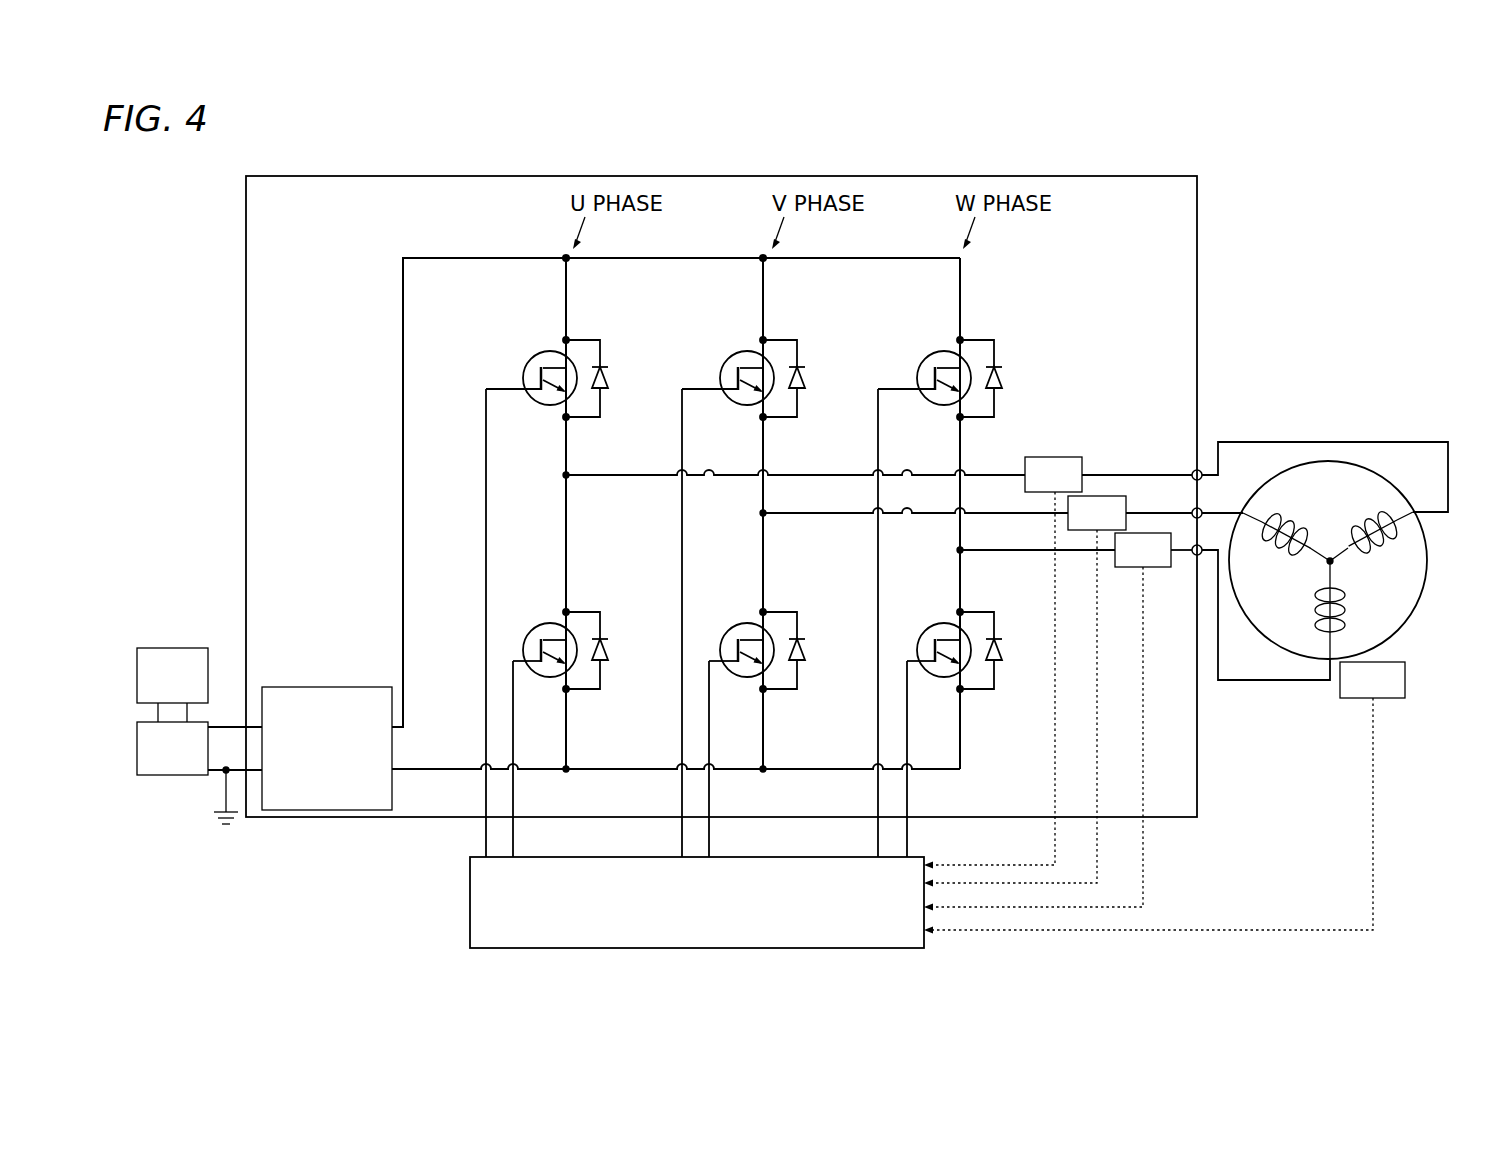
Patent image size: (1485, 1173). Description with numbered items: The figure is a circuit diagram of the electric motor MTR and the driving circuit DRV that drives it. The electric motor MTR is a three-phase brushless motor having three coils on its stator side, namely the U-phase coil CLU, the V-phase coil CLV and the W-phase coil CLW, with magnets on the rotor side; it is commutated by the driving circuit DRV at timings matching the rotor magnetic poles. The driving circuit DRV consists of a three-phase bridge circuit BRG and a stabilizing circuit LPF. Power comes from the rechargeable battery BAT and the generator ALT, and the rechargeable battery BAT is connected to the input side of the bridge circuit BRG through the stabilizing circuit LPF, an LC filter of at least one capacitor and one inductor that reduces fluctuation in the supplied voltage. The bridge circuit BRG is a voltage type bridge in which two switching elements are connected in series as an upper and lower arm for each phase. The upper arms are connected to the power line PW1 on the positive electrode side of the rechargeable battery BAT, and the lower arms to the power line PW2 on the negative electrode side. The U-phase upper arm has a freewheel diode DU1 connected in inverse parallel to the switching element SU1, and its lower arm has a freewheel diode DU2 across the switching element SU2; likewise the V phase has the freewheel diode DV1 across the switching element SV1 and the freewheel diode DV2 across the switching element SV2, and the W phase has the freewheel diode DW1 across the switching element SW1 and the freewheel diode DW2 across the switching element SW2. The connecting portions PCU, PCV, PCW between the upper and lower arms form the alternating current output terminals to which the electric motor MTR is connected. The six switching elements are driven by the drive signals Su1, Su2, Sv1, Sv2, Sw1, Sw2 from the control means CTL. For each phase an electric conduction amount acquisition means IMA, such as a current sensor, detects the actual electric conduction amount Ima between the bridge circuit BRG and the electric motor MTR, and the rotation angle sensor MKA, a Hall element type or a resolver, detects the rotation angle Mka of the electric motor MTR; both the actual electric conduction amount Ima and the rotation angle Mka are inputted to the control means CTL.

The driving circuit DRV is at (386, 171).
The power line PW1 is at (430, 255).
The power line PW2 is at (408, 767).
The three-phase bridge circuit BRG is at (480, 354).
The switching element SU1 is at (540, 350).
The freewheel diode DU1 is at (604, 361).
The switching element SV1 is at (737, 350).
The freewheel diode DV1 is at (801, 361).
The switching element SW1 is at (934, 350).
The freewheel diode DW1 is at (998, 361).
The switching element SU2 is at (540, 621).
The freewheel diode DU2 is at (604, 633).
The switching element SV2 is at (737, 621).
The freewheel diode DV2 is at (801, 633).
The switching element SW2 is at (934, 621).
The freewheel diode DW2 is at (998, 633).
The connecting portion PCU is at (568, 518).
The connecting portion PCV is at (765, 538).
The connecting portion PCW is at (962, 556).
The electric conduction amount acquisition means IMA is at (1108, 512).
The electric motor MTR is at (1420, 601).
The U-phase coil CLU is at (1367, 522).
The V-phase coil CLV is at (1285, 546).
The W-phase coil CLW is at (1345, 600).
The rotation angle sensor MKA is at (1372, 680).
The generator ALT is at (172, 685).
The rechargeable battery BAT is at (199, 773).
The stabilizing circuit LPF is at (327, 748).
The control means CTL is at (697, 902).
The drive signal Su1 is at (461, 623).
The drive signal Su2 is at (533, 759).
The drive signal Sv1 is at (659, 623).
The drive signal Sv2 is at (729, 759).
The drive signal Sw1 is at (850, 623).
The drive signal Sw2 is at (928, 759).
The actual electric conduction amount Ima is at (1033, 701).
The rotation angle Mka is at (1148, 816).